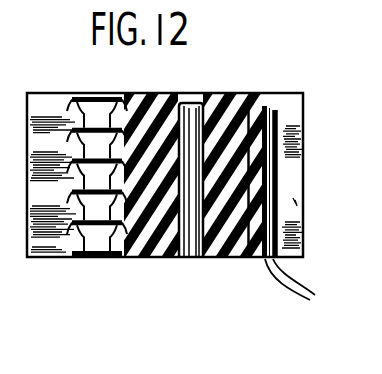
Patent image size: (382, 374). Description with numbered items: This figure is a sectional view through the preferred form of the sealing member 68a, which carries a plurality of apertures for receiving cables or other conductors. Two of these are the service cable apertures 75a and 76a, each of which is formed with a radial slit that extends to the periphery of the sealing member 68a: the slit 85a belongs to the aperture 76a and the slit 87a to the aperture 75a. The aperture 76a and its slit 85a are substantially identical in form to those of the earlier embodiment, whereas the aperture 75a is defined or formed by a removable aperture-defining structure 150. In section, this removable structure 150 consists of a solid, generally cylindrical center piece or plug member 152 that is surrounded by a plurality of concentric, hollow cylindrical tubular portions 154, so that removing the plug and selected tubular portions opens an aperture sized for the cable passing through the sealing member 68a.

The radial slit 85a is at (45, 124).
The radial slit 87a is at (300, 110).
The service cable aperture 76a is at (108, 264).
The sealing member 68a is at (172, 268).
The center piece or plug member 152 is at (217, 259).
The removable aperture-defining structure 150 is at (244, 269).
The concentric tubular portions 154 is at (309, 290).
The service cable aperture 75a is at (232, 300).